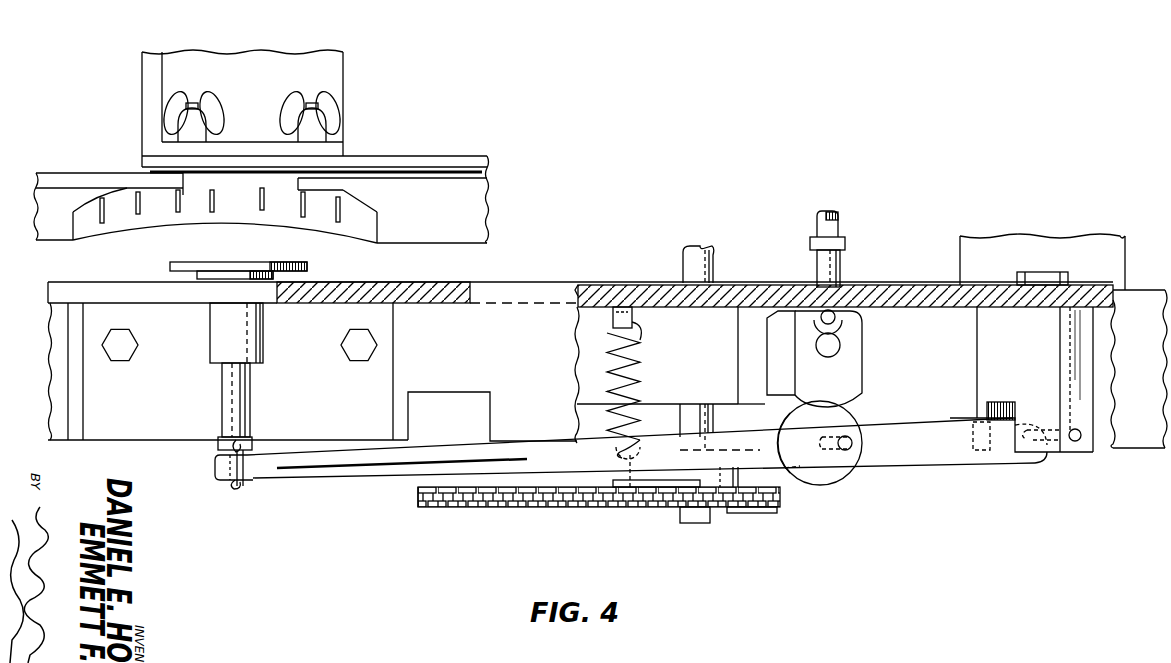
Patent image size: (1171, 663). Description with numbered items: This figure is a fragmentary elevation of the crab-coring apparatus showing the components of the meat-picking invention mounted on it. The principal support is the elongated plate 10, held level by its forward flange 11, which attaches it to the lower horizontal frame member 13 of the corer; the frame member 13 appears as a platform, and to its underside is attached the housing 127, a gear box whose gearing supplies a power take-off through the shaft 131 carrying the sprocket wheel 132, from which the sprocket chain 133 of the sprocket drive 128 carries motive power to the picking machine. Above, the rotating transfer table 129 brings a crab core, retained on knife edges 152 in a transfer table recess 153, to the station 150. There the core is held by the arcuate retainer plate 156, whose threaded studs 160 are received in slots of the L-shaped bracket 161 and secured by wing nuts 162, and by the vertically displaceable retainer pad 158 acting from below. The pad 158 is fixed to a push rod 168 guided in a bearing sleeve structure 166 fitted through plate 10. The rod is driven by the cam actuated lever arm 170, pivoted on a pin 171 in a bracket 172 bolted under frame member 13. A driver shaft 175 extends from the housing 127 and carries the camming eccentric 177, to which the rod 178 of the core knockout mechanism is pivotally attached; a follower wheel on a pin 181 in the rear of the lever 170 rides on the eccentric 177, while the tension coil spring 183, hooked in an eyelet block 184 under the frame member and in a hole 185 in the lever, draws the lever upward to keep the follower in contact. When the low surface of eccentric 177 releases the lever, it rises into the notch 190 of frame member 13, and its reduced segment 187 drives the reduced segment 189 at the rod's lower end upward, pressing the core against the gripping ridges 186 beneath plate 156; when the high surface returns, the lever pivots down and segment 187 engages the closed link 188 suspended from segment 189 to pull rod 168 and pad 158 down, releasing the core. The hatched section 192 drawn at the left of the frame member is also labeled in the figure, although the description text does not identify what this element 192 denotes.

The elongated plate 10 is at (116, 279).
The flange 11 is at (128, 428).
The lower horizontal frame member 13 is at (652, 285).
The housing 127 is at (697, 392).
The sprocket drive 128 is at (557, 506).
The transfer table 129 is at (468, 210).
The shaft 131 is at (705, 417).
The sprocket wheel 132 is at (742, 513).
The sprocket chain 133 is at (515, 497).
The station 150 is at (240, 254).
The knife edges 152 is at (140, 208).
The transfer table recess 153 is at (290, 212).
The arcuate retainer plate 156 is at (453, 158).
The retainer pad 158 is at (307, 268).
The threaded studs 160 is at (191, 104).
The L-shaped bracket 161 is at (325, 63).
The wing nuts 162 is at (278, 119).
The bearing sleeve structure 166 is at (257, 340).
The push rod 168 is at (248, 392).
The cam actuated lever arm 170 is at (362, 467).
The pin 171 is at (1075, 442).
The bracket 172 is at (985, 385).
The driver shaft 175 is at (826, 348).
The camming eccentric 177 is at (853, 360).
The rod 178 is at (835, 225).
The pin 181 is at (852, 443).
The tension coil spring 183 is at (635, 363).
The eyelet block 184 is at (633, 322).
The hole 185 is at (628, 450).
The gripping ridges 186 is at (239, 173).
The reduced segment 187 is at (250, 472).
The closed link 188 is at (233, 481).
The reduced segment 189 is at (223, 436).
The notch 190 is at (492, 416).
The plate 192 is at (408, 281).